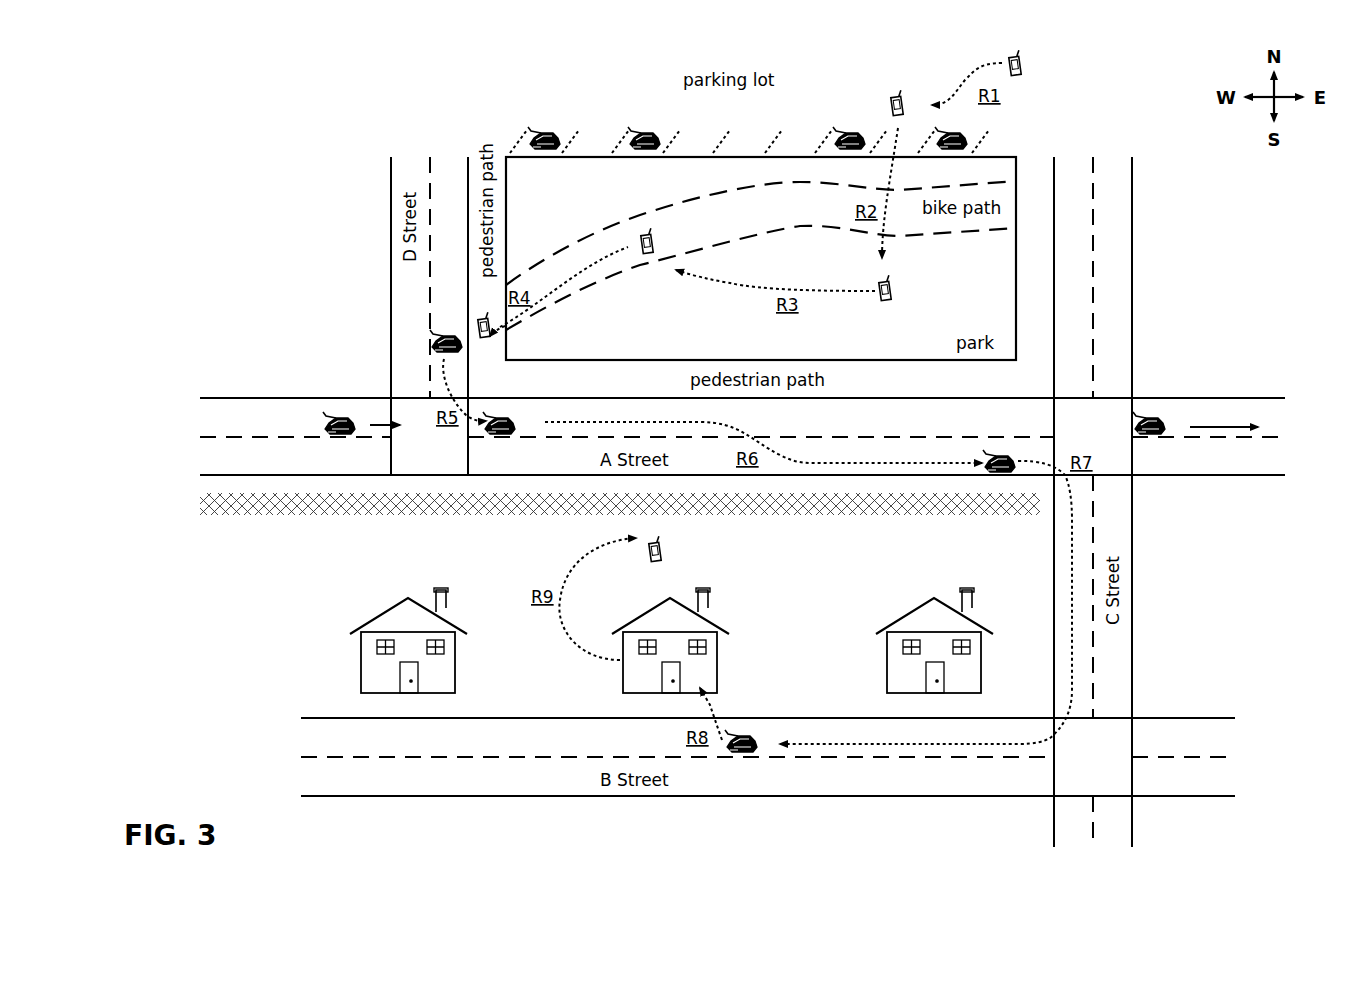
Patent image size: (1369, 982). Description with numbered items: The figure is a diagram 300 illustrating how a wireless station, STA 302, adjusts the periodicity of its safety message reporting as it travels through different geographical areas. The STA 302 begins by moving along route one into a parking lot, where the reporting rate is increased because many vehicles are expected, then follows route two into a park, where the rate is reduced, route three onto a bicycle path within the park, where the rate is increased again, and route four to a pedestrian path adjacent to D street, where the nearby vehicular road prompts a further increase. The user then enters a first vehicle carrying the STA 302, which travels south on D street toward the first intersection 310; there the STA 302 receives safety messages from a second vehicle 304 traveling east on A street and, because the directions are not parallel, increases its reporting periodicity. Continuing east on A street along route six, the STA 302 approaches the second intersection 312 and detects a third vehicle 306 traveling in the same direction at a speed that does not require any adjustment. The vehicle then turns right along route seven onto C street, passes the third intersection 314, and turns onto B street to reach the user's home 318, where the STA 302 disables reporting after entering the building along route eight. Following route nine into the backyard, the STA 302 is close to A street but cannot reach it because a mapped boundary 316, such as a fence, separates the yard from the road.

The diagram 300 is at (186, 98).
The STA 302 is at (751, 396).
The second vehicle 304 is at (350, 417).
The third vehicle 306 is at (1160, 417).
The first intersection 310 is at (429, 436).
The second intersection 312 is at (1093, 436).
The third intersection 314 is at (1093, 757).
The mapped boundary 316 is at (578, 550).
The user's home 318 is at (714, 630).